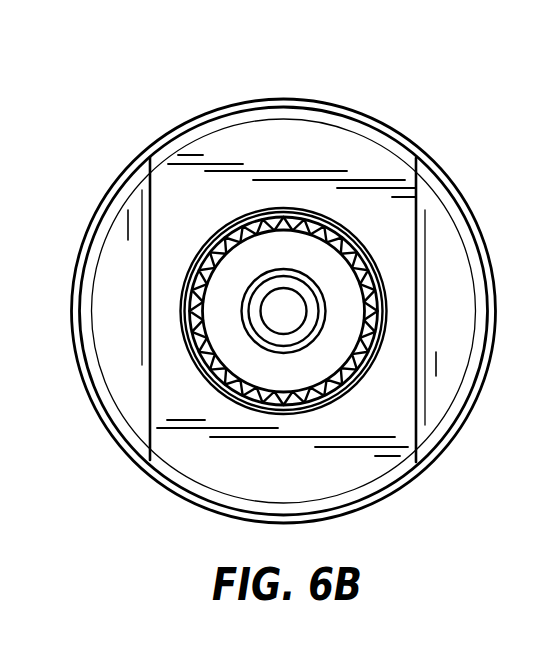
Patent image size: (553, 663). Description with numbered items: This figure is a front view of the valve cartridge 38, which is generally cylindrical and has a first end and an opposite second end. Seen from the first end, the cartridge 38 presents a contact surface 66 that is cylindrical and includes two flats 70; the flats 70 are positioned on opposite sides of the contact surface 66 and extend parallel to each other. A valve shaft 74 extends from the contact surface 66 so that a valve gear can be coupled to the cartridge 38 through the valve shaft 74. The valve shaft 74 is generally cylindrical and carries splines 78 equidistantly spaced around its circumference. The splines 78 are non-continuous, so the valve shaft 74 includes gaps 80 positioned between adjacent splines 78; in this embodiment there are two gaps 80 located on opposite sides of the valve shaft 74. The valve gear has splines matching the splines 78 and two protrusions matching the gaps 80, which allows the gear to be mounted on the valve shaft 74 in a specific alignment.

The valve cartridge 38 is at (340, 72).
The contact surface 66 is at (249, 150).
The flats 70 is at (150, 281).
The valve shaft 74 is at (345, 300).
The splines 78 is at (222, 236).
The gaps 80 is at (357, 240).